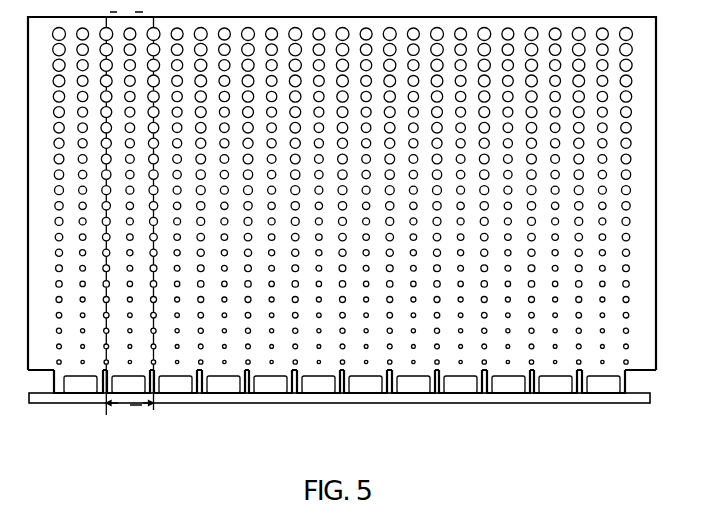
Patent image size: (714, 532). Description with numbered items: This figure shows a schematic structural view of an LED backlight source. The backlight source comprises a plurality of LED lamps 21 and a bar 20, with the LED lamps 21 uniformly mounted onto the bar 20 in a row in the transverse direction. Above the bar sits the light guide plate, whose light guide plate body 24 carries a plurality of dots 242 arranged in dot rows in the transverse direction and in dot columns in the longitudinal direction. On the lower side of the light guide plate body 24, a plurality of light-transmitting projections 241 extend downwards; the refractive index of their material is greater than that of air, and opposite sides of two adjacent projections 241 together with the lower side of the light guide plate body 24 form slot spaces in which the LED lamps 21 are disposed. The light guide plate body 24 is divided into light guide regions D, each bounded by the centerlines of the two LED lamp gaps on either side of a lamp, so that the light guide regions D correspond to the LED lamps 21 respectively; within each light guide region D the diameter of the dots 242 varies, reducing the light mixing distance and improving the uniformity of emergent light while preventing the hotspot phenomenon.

The bar 20 is at (73, 397).
The light guide region D is at (128, 347).
The projections 241 is at (197, 387).
The dots 242 is at (245, 370).
The light guide plate body 24 is at (307, 350).
The LED lamps 21 is at (365, 388).